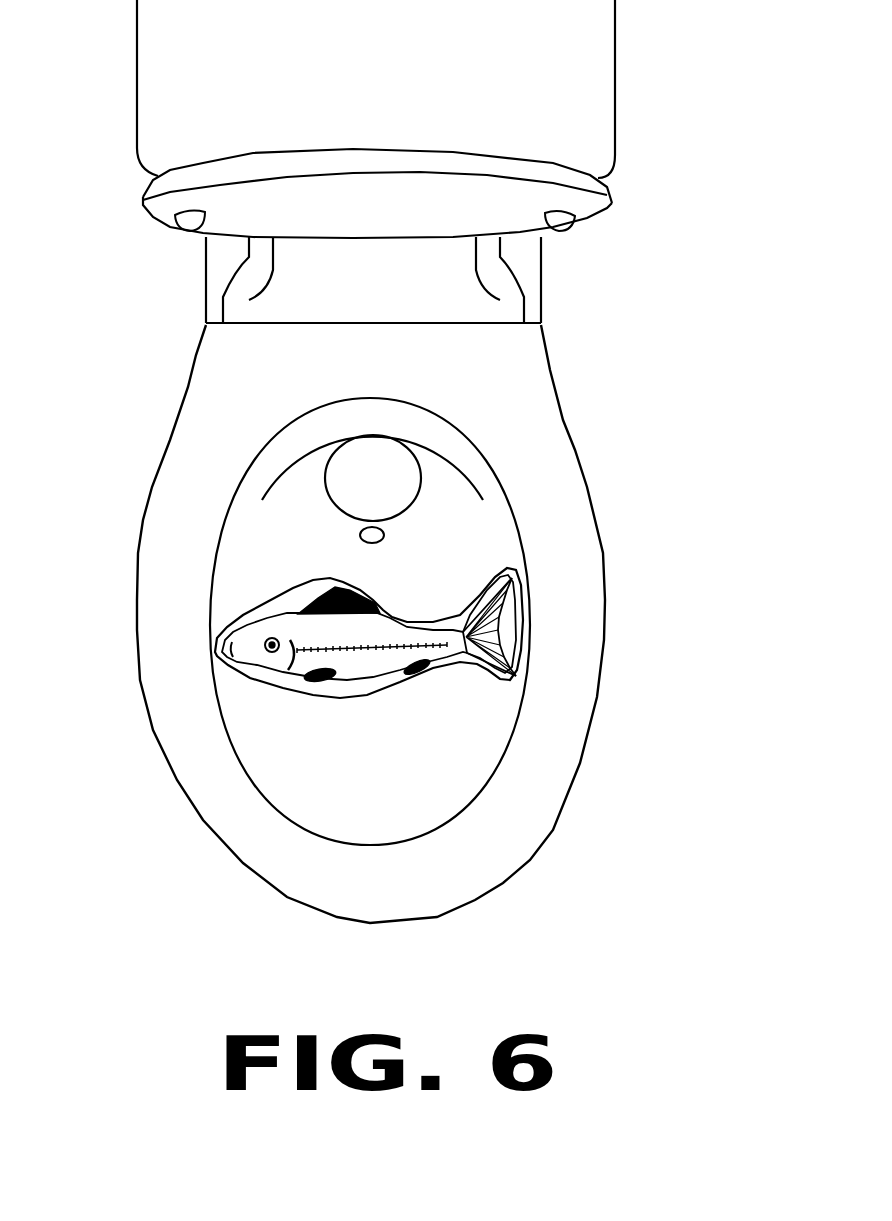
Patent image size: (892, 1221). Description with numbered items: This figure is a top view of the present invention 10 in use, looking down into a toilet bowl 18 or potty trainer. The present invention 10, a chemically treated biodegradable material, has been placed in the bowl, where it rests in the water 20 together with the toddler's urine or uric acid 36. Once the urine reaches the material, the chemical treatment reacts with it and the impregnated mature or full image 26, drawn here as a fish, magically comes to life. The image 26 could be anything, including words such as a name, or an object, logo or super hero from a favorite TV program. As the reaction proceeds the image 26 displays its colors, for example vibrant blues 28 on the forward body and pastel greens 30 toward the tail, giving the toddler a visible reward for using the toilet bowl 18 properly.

The present invention 10 is at (295, 697).
The toilet bowl 18 is at (465, 735).
The water 20 is at (435, 758).
The image 26 is at (387, 615).
The vibrant blues 28 is at (300, 627).
The pastel greens 30 is at (519, 652).
The urine or uric acid 36 is at (498, 702).